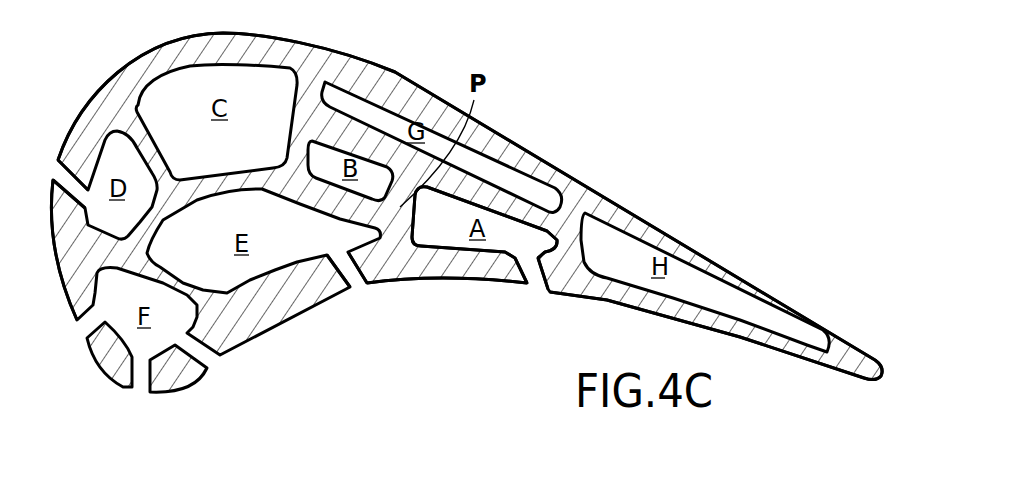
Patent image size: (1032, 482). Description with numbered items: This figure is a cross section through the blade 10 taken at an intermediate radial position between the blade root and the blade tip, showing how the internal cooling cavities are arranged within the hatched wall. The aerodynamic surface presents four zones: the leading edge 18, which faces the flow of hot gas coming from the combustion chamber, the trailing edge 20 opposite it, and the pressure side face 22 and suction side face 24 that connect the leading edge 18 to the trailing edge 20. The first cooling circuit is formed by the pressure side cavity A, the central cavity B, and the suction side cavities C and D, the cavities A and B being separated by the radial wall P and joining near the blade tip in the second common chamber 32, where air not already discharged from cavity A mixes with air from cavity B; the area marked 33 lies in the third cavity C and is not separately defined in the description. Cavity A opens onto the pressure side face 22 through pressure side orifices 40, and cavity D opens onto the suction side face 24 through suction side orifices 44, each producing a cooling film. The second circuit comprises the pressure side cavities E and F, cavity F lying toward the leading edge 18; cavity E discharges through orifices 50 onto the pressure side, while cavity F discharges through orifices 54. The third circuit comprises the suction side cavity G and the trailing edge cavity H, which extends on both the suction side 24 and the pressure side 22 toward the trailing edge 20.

The blade 10 is at (648, 137).
The leading edge 18 is at (50, 292).
The trailing edge 20 is at (897, 380).
The pressure side face 22 is at (450, 296).
The suction side face 24 is at (400, 63).
The second common chamber 32 is at (456, 230).
The cooling cavity C 33 is at (267, 128).
The pressure side orifices 40 is at (534, 288).
The suction side orifices 44 is at (70, 182).
The orifices 50 is at (357, 285).
The orifices 54 is at (92, 322).